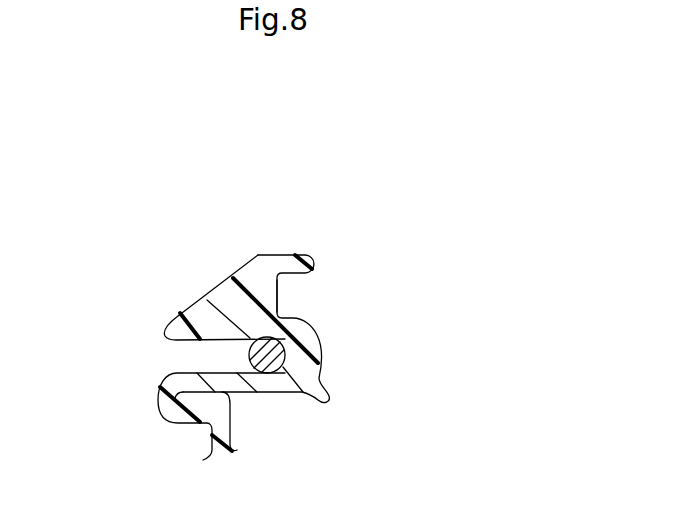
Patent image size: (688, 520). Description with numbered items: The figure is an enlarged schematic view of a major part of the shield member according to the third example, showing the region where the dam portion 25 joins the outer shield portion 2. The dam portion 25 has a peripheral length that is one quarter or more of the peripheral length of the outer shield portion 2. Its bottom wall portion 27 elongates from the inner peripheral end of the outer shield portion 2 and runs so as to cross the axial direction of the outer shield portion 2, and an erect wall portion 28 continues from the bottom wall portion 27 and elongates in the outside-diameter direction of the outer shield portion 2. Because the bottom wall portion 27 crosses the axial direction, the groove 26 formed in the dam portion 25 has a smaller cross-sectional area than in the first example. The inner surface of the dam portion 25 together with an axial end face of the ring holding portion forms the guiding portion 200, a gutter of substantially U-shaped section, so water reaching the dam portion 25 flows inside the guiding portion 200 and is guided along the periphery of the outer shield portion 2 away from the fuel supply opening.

The outer shield portion 2 is at (344, 350).
The guiding portion 200 is at (306, 313).
The dam portion 25 is at (230, 284).
The groove 26 is at (277, 297).
The bottom wall portion 27 is at (211, 318).
The erect wall portion 28 is at (296, 256).